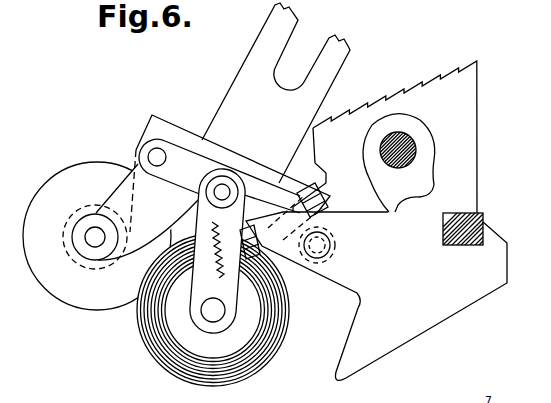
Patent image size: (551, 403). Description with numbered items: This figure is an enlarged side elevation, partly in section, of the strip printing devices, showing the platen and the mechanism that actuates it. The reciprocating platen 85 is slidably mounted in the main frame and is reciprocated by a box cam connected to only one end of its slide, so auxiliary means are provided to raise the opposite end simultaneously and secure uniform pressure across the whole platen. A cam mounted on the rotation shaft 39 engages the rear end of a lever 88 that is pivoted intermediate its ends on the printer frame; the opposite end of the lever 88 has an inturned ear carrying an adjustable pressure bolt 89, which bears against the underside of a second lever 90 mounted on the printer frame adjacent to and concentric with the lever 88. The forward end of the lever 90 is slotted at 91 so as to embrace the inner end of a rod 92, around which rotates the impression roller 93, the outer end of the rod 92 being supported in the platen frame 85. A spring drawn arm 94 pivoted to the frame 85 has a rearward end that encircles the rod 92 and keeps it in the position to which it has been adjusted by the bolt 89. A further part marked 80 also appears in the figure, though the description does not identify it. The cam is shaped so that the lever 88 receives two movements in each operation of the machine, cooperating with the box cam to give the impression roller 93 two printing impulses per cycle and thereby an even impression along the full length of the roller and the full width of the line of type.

The rotation shaft 39 is at (391, 135).
The keyhole opening 80 is at (416, 127).
The reciprocating platen 85 is at (168, 133).
The lever 88 is at (361, 230).
The adjustable pressure bolt 89 is at (225, 251).
The lever 90 is at (273, 190).
The slot 91 is at (170, 180).
The rod 92 is at (223, 184).
The impression roller 93 is at (243, 160).
The spring drawn arm 94 is at (182, 211).